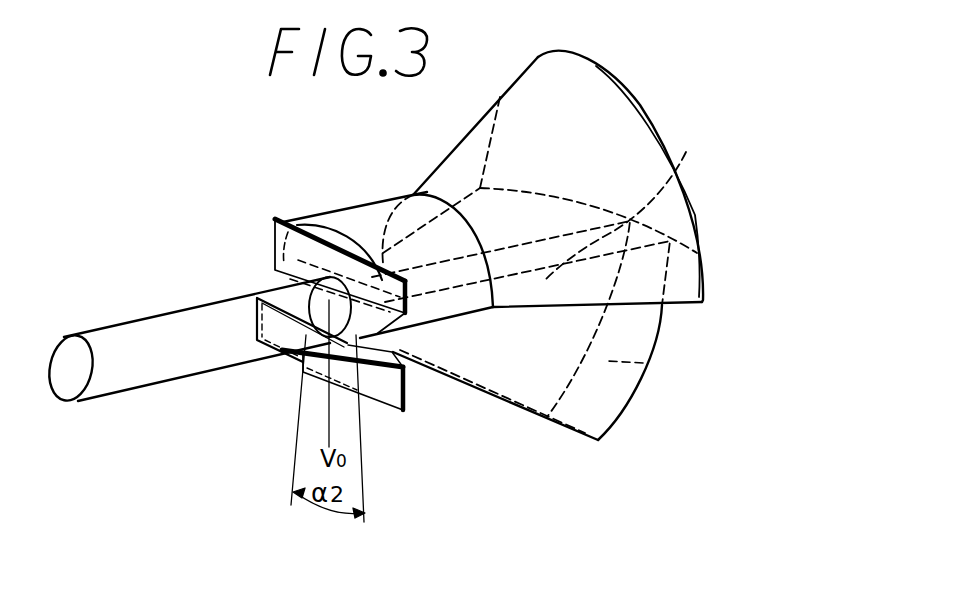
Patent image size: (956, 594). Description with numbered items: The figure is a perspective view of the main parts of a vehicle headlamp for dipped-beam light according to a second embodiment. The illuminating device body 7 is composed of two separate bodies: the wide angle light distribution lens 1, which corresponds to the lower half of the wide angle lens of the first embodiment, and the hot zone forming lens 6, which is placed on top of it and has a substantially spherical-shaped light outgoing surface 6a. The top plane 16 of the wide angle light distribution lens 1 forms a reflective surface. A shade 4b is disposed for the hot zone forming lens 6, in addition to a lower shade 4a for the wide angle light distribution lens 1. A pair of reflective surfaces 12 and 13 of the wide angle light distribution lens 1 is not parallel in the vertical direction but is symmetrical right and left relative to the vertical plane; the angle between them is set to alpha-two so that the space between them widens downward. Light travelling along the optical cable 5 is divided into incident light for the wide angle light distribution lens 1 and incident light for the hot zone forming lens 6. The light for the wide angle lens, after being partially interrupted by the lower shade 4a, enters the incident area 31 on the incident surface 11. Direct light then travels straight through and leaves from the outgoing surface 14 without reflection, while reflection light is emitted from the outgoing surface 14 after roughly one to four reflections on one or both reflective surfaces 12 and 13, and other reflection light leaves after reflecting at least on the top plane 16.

The wide angle light distribution lens 1 is at (498, 425).
The shade 4a is at (388, 413).
The shade 4b is at (273, 238).
The optical cable 5 is at (132, 320).
The hot zone forming lens 6 is at (443, 165).
The light outgoing surface 6a is at (667, 132).
The illuminating device body 7 is at (633, 75).
The incident surface 11 is at (297, 368).
The reflective surface 12 is at (542, 395).
The reflective surface 13 is at (483, 352).
The outgoing surface 14 is at (643, 363).
The top plane 16 is at (686, 152).
The incident area 31 is at (300, 285).